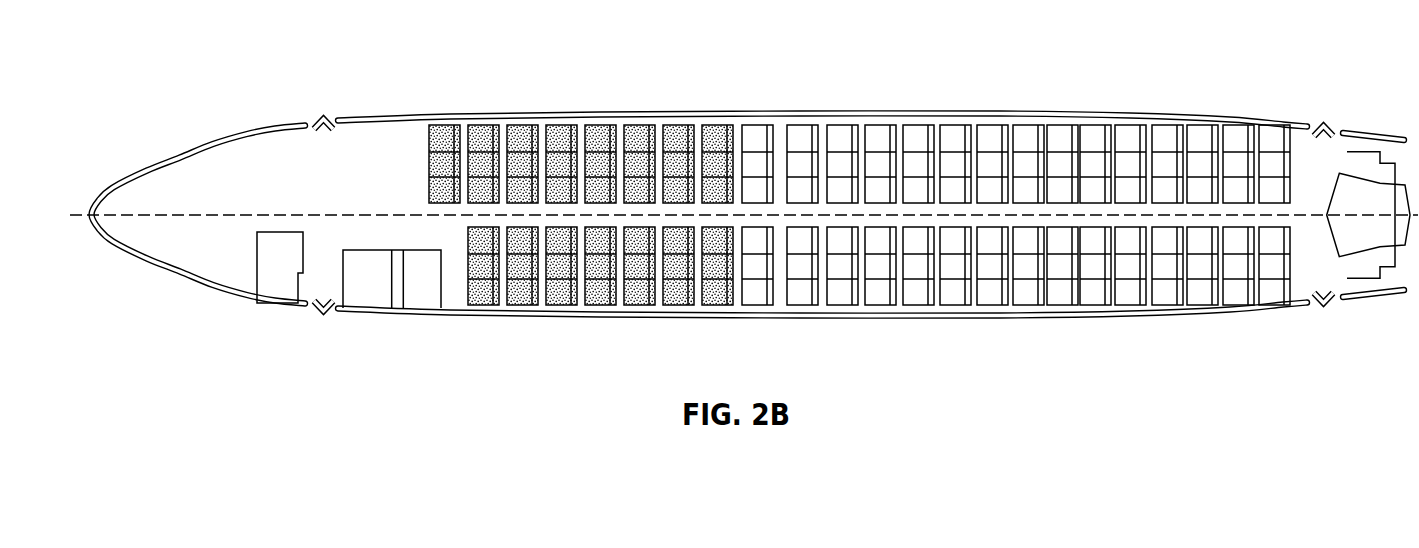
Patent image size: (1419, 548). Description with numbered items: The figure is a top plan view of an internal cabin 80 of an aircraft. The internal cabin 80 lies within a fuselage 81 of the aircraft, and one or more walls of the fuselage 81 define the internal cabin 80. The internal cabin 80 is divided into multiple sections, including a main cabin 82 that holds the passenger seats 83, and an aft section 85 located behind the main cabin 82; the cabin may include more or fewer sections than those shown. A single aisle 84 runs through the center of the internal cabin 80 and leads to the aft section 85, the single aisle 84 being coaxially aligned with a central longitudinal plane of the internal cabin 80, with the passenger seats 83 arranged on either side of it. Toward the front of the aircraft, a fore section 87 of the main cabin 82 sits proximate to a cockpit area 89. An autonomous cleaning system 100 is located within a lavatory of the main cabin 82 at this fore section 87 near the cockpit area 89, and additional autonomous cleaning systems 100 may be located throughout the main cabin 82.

The internal cabin 80 is at (341, 54).
The fuselage 81 is at (545, 114).
The main cabin 82 is at (484, 136).
The passenger seats 83 is at (755, 145).
The single aisle 84 is at (878, 210).
The aft section 85 is at (1308, 148).
The fore section 87 is at (396, 146).
The cockpit area 89 is at (214, 170).
The autonomous cleaning system 100 is at (395, 297).